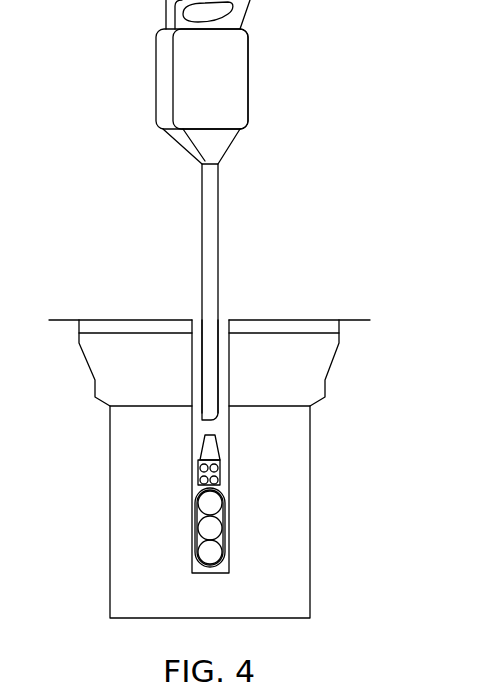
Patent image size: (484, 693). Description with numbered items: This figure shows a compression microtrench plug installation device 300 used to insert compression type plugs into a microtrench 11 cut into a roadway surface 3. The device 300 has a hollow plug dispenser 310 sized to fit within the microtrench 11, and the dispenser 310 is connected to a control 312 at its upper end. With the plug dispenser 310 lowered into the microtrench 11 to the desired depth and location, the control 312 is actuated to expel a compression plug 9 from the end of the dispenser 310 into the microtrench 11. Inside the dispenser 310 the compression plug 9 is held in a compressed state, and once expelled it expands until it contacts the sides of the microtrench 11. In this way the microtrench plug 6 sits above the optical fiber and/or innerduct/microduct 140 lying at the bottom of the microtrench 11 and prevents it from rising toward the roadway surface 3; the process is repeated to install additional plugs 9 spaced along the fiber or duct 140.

The control 312 is at (238, 55).
The compression microtrench plug installation device 300 is at (218, 232).
The plug dispenser 310 is at (199, 324).
The roadway surface 3 is at (306, 319).
The microtrench 11 is at (223, 424).
The compression plug 9 is at (207, 452).
The microtrench plug 6 is at (219, 467).
The optical fiber and/or innerduct/microduct 140 is at (226, 528).